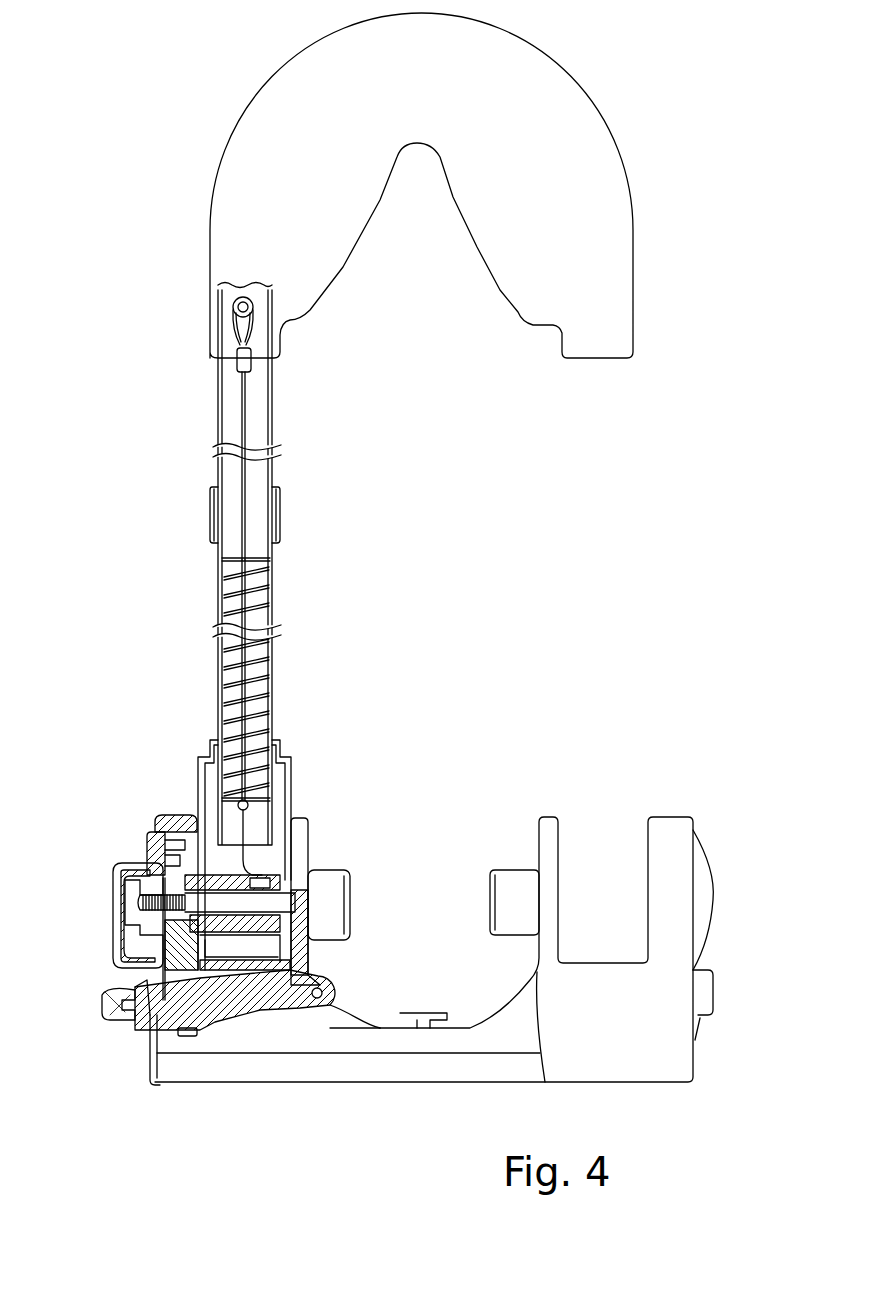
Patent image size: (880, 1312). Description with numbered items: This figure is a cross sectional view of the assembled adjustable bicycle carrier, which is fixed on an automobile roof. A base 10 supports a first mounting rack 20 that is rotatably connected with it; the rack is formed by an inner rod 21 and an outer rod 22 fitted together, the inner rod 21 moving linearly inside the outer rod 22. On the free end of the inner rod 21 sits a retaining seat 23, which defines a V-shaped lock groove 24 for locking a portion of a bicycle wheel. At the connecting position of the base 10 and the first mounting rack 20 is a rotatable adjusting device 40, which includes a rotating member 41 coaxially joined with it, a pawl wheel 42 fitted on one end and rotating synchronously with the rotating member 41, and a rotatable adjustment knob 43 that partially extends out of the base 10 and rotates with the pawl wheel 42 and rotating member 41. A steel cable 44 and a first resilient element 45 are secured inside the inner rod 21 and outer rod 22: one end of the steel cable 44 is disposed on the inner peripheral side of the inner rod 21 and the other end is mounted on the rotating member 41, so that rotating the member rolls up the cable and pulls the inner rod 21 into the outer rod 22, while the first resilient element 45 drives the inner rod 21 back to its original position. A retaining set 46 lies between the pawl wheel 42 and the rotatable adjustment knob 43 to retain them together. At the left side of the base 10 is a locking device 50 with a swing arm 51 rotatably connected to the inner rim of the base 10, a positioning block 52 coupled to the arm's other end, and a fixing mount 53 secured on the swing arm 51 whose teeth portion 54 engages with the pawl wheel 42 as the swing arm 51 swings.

The base 10 is at (671, 814).
The first mounting rack 20 is at (131, 205).
The inner rod 21 is at (218, 385).
The outer rod 22 is at (212, 578).
The retaining seat 23 is at (208, 290).
The V-shaped lock groove 24 is at (348, 263).
The rotatable adjusting device 40 is at (86, 791).
The rotating member 41 is at (183, 878).
The pawl wheel 42 is at (168, 952).
The rotatable adjustment knob 43 is at (128, 910).
The steel cable 44 is at (260, 866).
The first resilient element 45 is at (270, 678).
The retaining set 46 is at (180, 850).
The locking device 50 is at (260, 1135).
The swing arm 51 is at (220, 1003).
The positioning block 52 is at (112, 1020).
The fixing mount 53 is at (185, 1036).
The teeth portion 54 is at (140, 982).